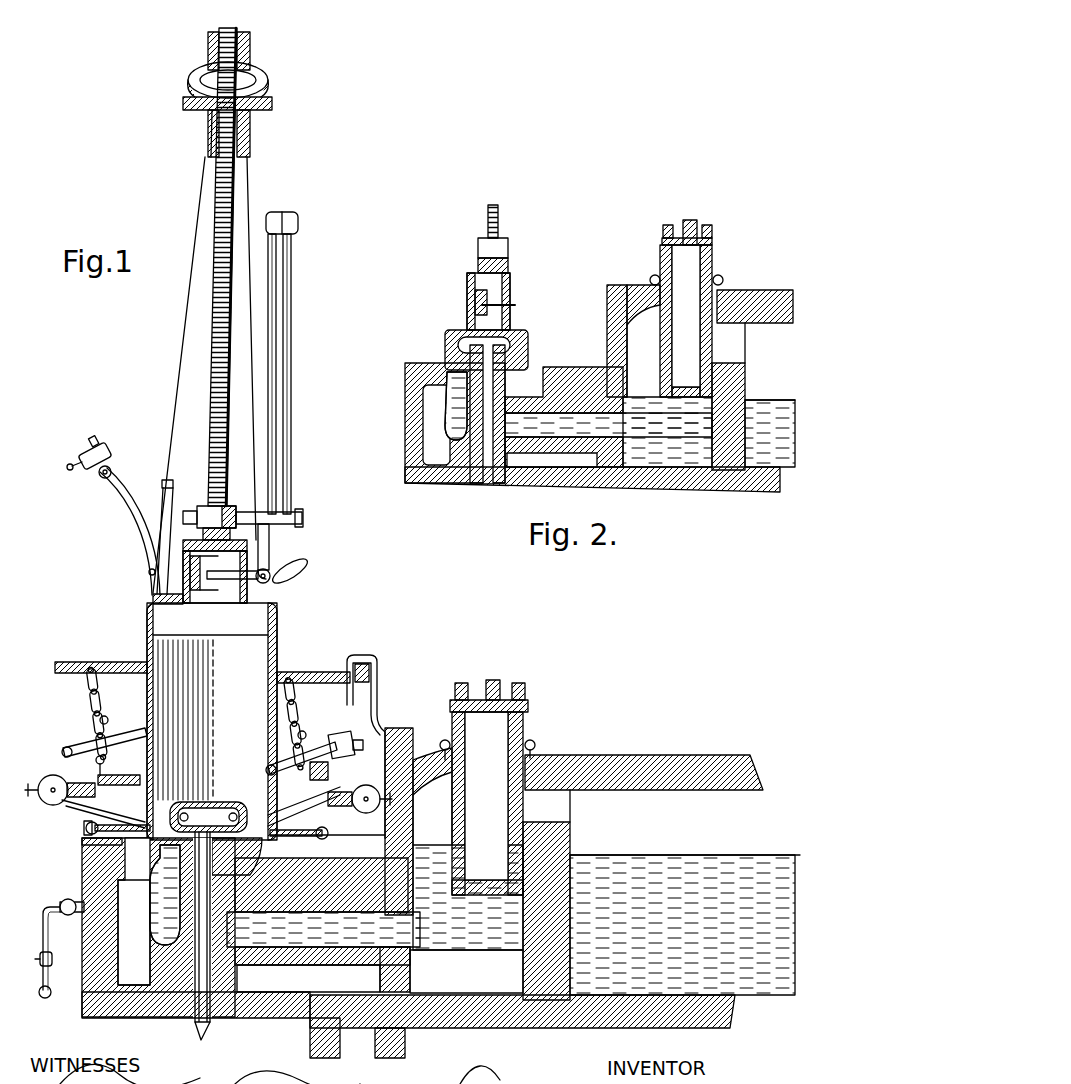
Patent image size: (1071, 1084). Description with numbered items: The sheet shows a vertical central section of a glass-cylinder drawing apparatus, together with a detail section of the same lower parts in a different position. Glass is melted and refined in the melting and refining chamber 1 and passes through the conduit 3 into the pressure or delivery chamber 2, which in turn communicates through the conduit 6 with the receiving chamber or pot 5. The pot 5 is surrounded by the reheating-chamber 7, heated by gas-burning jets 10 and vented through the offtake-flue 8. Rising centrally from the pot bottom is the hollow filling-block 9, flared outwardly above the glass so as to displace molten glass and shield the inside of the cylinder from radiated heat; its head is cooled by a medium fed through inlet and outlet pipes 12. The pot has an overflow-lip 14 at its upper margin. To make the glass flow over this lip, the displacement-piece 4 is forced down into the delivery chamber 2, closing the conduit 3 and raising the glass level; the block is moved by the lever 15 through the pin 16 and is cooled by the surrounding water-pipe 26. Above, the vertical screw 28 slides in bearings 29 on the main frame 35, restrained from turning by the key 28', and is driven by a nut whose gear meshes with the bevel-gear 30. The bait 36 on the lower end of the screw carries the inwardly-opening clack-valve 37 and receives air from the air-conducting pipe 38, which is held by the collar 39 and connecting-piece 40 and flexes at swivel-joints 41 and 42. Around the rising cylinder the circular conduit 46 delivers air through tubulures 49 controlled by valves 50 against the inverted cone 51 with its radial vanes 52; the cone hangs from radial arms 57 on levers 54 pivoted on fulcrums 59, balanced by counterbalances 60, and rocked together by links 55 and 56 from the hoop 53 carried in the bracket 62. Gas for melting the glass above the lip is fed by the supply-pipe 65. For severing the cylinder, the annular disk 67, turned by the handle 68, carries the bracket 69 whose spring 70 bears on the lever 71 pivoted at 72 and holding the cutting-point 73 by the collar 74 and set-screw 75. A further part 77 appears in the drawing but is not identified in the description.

In FIG. 1, the melting and refining chamber 1 is at (643, 877).
In FIG. 2, the melting and refining chamber 1 is at (752, 380).
In FIG. 1, the pressure or delivery chamber 2 is at (418, 821).
In FIG. 2, the pressure or delivery chamber 2 is at (633, 341).
In FIG. 1, the conduit 3 is at (565, 858).
In FIG. 2, the conduit 3 is at (735, 415).
In FIG. 1, the displacement-piece 4 is at (487, 803).
In FIG. 2, the displacement-piece 4 is at (686, 321).
In FIG. 1, the receiving chamber or pot 5 is at (152, 908).
In FIG. 2, the receiving chamber or pot 5 is at (455, 418).
In FIG. 1, the conduit 6 is at (375, 919).
In FIG. 2, the conduit 6 is at (592, 429).
In FIG. 1, the reheating-chamber 7 is at (134, 932).
In FIG. 2, the reheating-chamber 7 is at (436, 425).
In FIG. 1, the offtake-flue 8 is at (408, 1025).
In FIG. 1, the filling-block 9 is at (198, 928).
In FIG. 2, the filling-block 9 is at (487, 414).
In FIG. 1, the gas-burning jets 10 is at (59, 936).
In FIG. 1, the inlet and outlet pipes 12 is at (201, 1041).
In FIG. 1, the overflow-lip 14 is at (158, 927).
In FIG. 2, the overflow-lip 14 is at (448, 362).
In FIG. 1, the lever 15 is at (498, 684).
In FIG. 2, the lever 15 is at (690, 222).
In FIG. 1, the pin 16 is at (528, 710).
In FIG. 2, the pin 16 is at (712, 243).
In FIG. 1, the water-pipe 26 is at (536, 744).
In FIG. 2, the water-pipe 26 is at (723, 281).
In FIG. 1, the vertical screw 28 is at (190, 267).
In FIG. 2, the vertical screw 28 is at (519, 215).
In FIG. 1, the key 28' is at (178, 137).
In FIG. 1, the bearings 29 is at (250, 55).
In FIG. 1, the bevel-gear 30 is at (268, 82).
In FIG. 1, the main frame 35 is at (190, 372).
In FIG. 1, the bait 36 is at (278, 637).
In FIG. 2, the bait 36 is at (520, 350).
In FIG. 1, the clack-valve 37 is at (203, 574).
In FIG. 2, the clack-valve 37 is at (470, 298).
In FIG. 1, the air-conducting pipe 38 is at (292, 292).
In FIG. 2, the air-conducting pipe 38 is at (516, 305).
In FIG. 1, the collar 39 is at (205, 506).
In FIG. 2, the collar 39 is at (508, 249).
In FIG. 1, the connecting-piece 40 is at (250, 513).
In FIG. 1, the swivel-joint 41 is at (300, 521).
In FIG. 1, the swivel-joint 42 is at (298, 222).
In FIG. 1, the circular conduit 46 is at (38, 797).
In FIG. 1, the tubulures 49 is at (84, 828).
In FIG. 1, the valve 50 is at (198, 786).
In FIG. 1, the inverted cone 51 is at (201, 804).
In FIG. 1, the radial vanes 52 is at (211, 822).
In FIG. 1, the hoop 53 is at (95, 662).
In FIG. 1, the levers 54 is at (70, 748).
In FIG. 1, the links 55 is at (92, 684).
In FIG. 1, the links 56 is at (107, 718).
In FIG. 1, the radial arms 57 is at (91, 760).
In FIG. 1, the fulcrums 59 is at (224, 765).
In FIG. 1, the counterbalances 60 is at (340, 738).
In FIG. 1, the bracket 62 is at (362, 654).
In FIG. 1, the supply-pipe 65 is at (85, 843).
In FIG. 1, the annular disk 67 is at (155, 601).
In FIG. 1, the handle 68 is at (307, 577).
In FIG. 1, the bracket 69 is at (167, 478).
In FIG. 1, the spring 70 is at (163, 518).
In FIG. 1, the lever 71 is at (140, 520).
In FIG. 1, the pivot 72 is at (148, 574).
In FIG. 1, the cutting-point 73 is at (100, 478).
In FIG. 1, the collar 74 is at (78, 462).
In FIG. 1, the set-screw 75 is at (91, 445).
In FIG. 1, the flange 77 is at (273, 104).